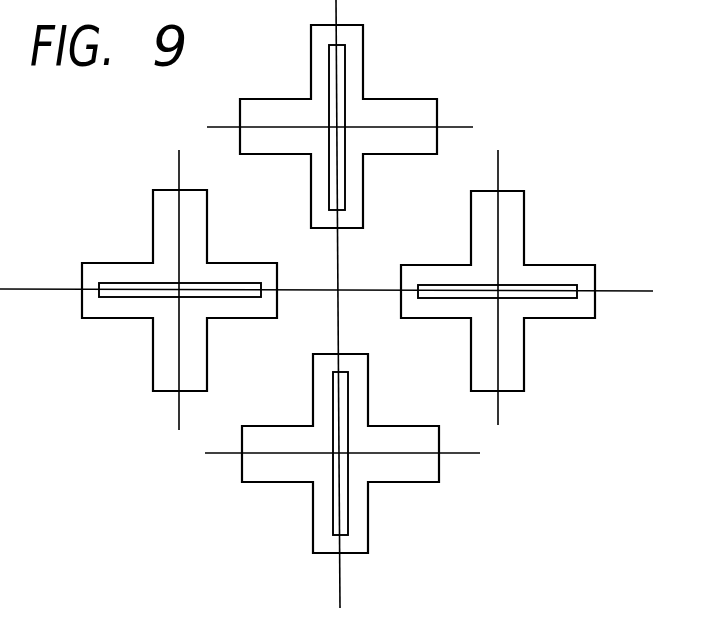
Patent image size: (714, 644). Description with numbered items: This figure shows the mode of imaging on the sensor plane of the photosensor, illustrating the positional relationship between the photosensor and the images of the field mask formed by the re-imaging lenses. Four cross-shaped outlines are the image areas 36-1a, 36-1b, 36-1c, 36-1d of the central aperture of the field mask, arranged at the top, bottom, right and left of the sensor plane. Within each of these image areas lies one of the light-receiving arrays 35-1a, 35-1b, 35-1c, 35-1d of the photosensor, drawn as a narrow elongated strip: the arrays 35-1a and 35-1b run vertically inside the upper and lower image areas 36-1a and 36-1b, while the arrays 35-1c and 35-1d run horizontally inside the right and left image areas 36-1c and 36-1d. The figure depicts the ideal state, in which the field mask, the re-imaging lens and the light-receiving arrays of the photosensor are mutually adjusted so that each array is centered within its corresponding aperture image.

The light-receiving array 35-1a is at (344, 70).
The image area of central aperture 36-1a is at (437, 102).
The light-receiving array 35-1b is at (348, 522).
The image area of central aperture 36-1b is at (313, 553).
The light-receiving array 35-1c is at (543, 283).
The image area of central aperture 36-1c is at (575, 320).
The light-receiving array 35-1d is at (118, 298).
The image area of central aperture 36-1d is at (98, 262).